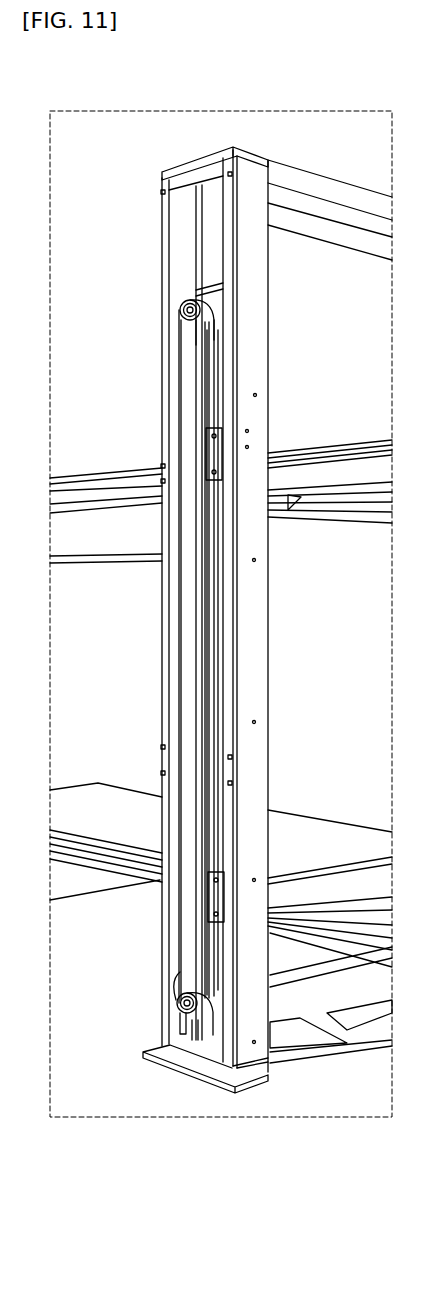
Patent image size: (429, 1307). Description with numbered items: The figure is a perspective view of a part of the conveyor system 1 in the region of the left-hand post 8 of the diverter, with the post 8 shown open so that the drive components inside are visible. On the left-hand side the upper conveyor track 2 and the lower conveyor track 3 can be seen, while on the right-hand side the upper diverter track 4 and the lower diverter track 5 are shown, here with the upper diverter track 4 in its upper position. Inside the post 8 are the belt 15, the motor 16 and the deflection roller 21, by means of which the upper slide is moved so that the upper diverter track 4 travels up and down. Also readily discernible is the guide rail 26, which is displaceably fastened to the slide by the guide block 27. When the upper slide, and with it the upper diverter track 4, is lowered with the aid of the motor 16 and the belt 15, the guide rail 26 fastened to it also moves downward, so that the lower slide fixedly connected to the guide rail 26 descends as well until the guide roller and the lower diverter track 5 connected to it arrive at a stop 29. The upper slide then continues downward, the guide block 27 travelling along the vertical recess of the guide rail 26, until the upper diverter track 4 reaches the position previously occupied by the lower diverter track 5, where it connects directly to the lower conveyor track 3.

The conveyor system 1 is at (349, 151).
The upper conveyor track 2 is at (97, 471).
The lower conveyor track 3 is at (100, 857).
The upper diverter track 4 is at (327, 447).
The lower diverter track 5 is at (356, 882).
The post 8 is at (162, 1017).
The belt 15 is at (190, 1030).
The motor 16 is at (205, 1025).
The deflection roller 21 is at (180, 310).
The guide rail 26 is at (232, 535).
The guide block 27 is at (233, 448).
The stop 29 is at (230, 953).